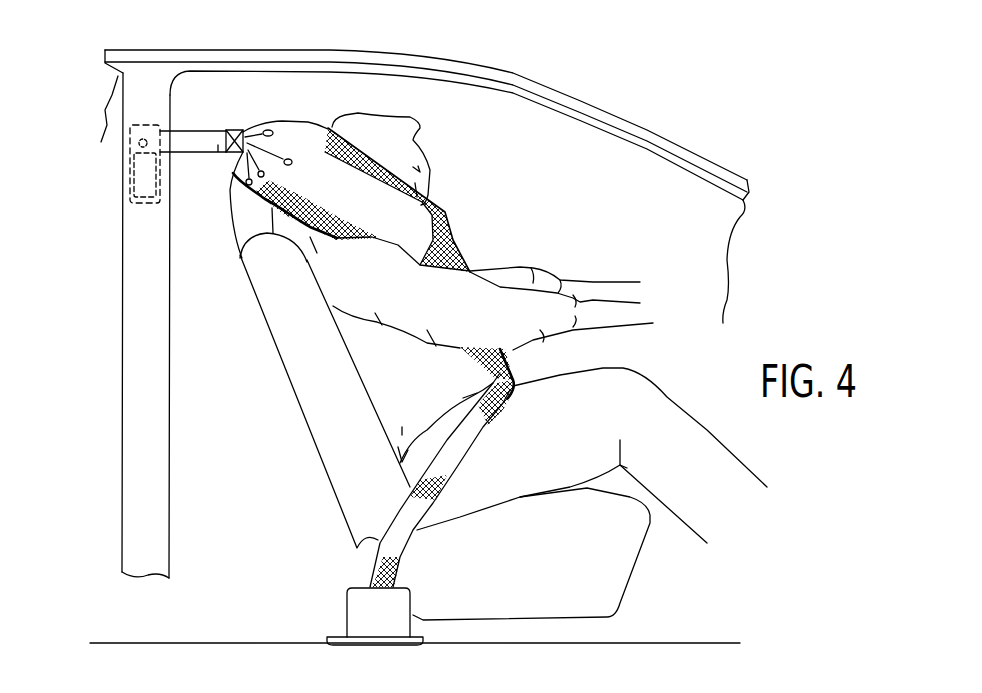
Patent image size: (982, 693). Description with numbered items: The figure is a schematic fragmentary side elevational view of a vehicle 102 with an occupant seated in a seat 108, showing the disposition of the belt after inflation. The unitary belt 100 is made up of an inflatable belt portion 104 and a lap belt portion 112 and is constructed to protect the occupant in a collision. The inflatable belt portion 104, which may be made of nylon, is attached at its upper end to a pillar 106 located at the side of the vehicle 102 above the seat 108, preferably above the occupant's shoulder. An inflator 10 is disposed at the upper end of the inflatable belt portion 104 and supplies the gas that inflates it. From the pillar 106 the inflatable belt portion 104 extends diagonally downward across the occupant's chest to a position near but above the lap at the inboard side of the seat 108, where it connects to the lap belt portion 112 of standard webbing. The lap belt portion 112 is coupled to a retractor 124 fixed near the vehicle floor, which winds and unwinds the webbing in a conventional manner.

The inflator 10 is at (128, 170).
The unitary belt 100 is at (482, 251).
The vehicle 102 is at (523, 76).
The inflatable belt portion 104 is at (420, 216).
The pillar 106 is at (150, 404).
The seat 108 is at (307, 430).
The lap belt portion 112 is at (470, 443).
The retractor 124 is at (365, 613).